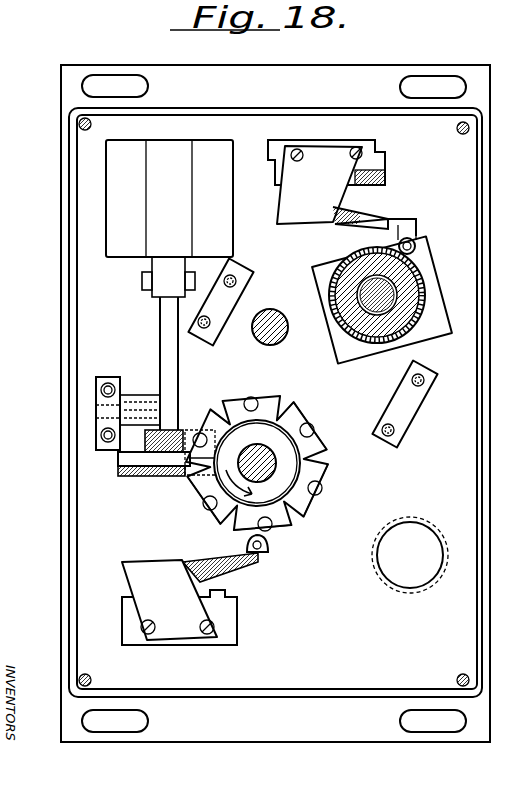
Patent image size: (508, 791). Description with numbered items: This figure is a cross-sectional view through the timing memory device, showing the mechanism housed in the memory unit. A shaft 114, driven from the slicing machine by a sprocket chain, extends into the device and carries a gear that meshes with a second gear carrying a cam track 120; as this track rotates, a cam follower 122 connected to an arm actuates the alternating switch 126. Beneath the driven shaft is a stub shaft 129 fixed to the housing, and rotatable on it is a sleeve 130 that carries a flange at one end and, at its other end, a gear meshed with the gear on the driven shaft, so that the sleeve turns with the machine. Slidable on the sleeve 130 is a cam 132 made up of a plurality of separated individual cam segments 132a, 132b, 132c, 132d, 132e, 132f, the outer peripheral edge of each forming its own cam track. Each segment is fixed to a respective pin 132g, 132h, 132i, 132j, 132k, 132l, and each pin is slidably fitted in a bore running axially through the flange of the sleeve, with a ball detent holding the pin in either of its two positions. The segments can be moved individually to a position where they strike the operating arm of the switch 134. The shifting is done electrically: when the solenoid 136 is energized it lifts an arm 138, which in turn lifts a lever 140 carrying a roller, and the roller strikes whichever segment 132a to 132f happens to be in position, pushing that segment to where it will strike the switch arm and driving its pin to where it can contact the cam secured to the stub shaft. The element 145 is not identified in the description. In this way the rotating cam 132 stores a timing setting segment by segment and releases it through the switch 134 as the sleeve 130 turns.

The shaft 114 is at (284, 303).
The cam track 120 is at (320, 268).
The cam follower 122 is at (418, 238).
The alternating switch 126 is at (320, 198).
The stub shaft 129 is at (257, 454).
The sleeve 130 is at (300, 455).
The cam 132 is at (343, 431).
The cam segment 132a is at (262, 561).
The cam segment 132b is at (333, 501).
The cam segment 132c is at (318, 421).
The cam segment 132d is at (279, 398).
The cam segment 132e is at (200, 410).
The cam segment 132f is at (225, 520).
The pin 132g is at (272, 525).
The pin 132h is at (322, 484).
The pin 132i is at (308, 423).
The pin 132j is at (251, 397).
The pin 132k is at (201, 433).
The pin 132l is at (203, 503).
The switch 134 is at (152, 553).
The solenoid 136 is at (118, 205).
The arm 138 is at (170, 330).
The lever 140 is at (152, 392).
The follower 145 is at (180, 473).